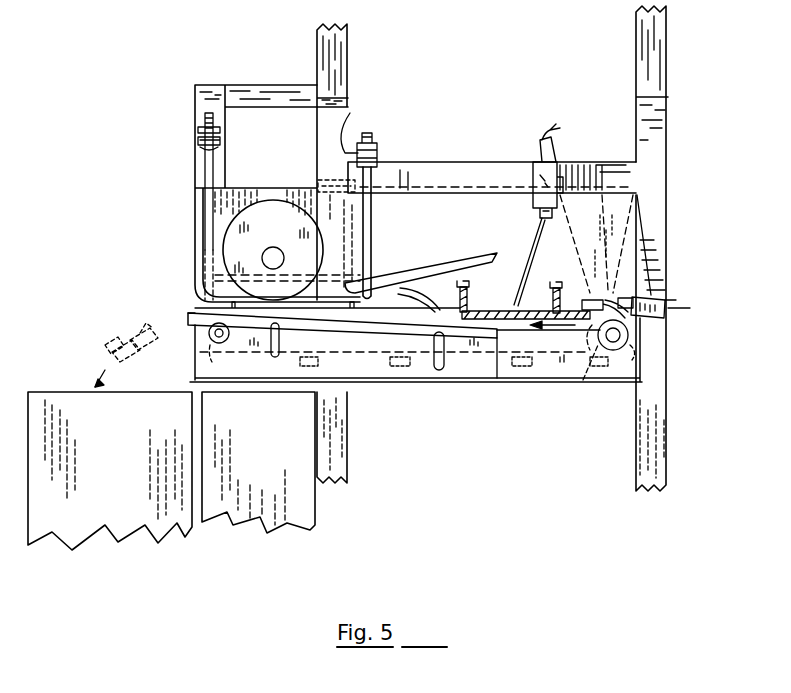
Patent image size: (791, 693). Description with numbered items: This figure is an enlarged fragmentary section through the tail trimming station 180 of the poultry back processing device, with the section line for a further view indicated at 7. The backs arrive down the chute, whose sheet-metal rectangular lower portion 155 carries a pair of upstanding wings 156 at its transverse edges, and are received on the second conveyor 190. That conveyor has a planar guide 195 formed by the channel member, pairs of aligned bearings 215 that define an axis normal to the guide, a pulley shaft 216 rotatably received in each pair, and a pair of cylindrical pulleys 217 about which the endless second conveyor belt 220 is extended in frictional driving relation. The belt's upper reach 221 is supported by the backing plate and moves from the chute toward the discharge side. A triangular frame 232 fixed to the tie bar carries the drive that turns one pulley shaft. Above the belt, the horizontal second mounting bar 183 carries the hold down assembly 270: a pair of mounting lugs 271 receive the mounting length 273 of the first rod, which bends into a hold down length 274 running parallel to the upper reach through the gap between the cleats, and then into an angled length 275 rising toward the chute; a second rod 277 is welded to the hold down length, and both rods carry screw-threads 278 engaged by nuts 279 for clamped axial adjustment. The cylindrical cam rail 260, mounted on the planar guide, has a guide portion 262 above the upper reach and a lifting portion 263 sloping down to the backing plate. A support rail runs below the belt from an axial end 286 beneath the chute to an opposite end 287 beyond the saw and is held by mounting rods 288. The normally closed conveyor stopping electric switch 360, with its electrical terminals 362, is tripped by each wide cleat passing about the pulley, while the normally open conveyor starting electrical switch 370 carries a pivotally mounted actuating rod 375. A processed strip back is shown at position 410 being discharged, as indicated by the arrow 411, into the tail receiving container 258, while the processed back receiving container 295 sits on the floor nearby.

The section line 7- 7 is at (272, 162).
The rectangular lower portion 155 is at (508, 320).
The wings 156 is at (457, 282).
The tail trimming station 180 is at (483, 496).
The second mounting bar 183 is at (478, 162).
The second conveyor 190 is at (556, 385).
The planar guide 195 is at (510, 295).
The bearings 215 is at (210, 345).
The pulley shaft 216 is at (222, 336).
The pulleys 217 is at (600, 368).
The second conveyor belt 220 is at (360, 350).
The upper reach 221 is at (440, 308).
The triangular frame 232 is at (645, 232).
The tail receiving container 258 is at (285, 478).
The cylindrical cam rail 260 is at (190, 283).
The guide portion 262 is at (333, 294).
The lifting portion 263 is at (380, 287).
The hold down assembly 270 is at (290, 370).
The mounting lugs 271 is at (198, 130).
The mounting length 273 is at (205, 200).
The hold down length 274 is at (300, 300).
The angled length 275 is at (497, 258).
The second rod 277 is at (378, 170).
The screw-threads 278 is at (210, 168).
The nuts 279 is at (356, 110).
The axial end 286 is at (487, 360).
The opposite end 287 is at (190, 312).
The mounting rods 288 is at (436, 346).
The processed back receiving container 295 is at (127, 480).
The conveyor stopping electric switch 360 is at (655, 298).
The electrical terminals 362 is at (680, 315).
The conveyor starting electrical switch 370 is at (530, 182).
The actuating rod 375 is at (546, 185).
The position of strip back 410 is at (128, 343).
The arrow 411 is at (105, 370).